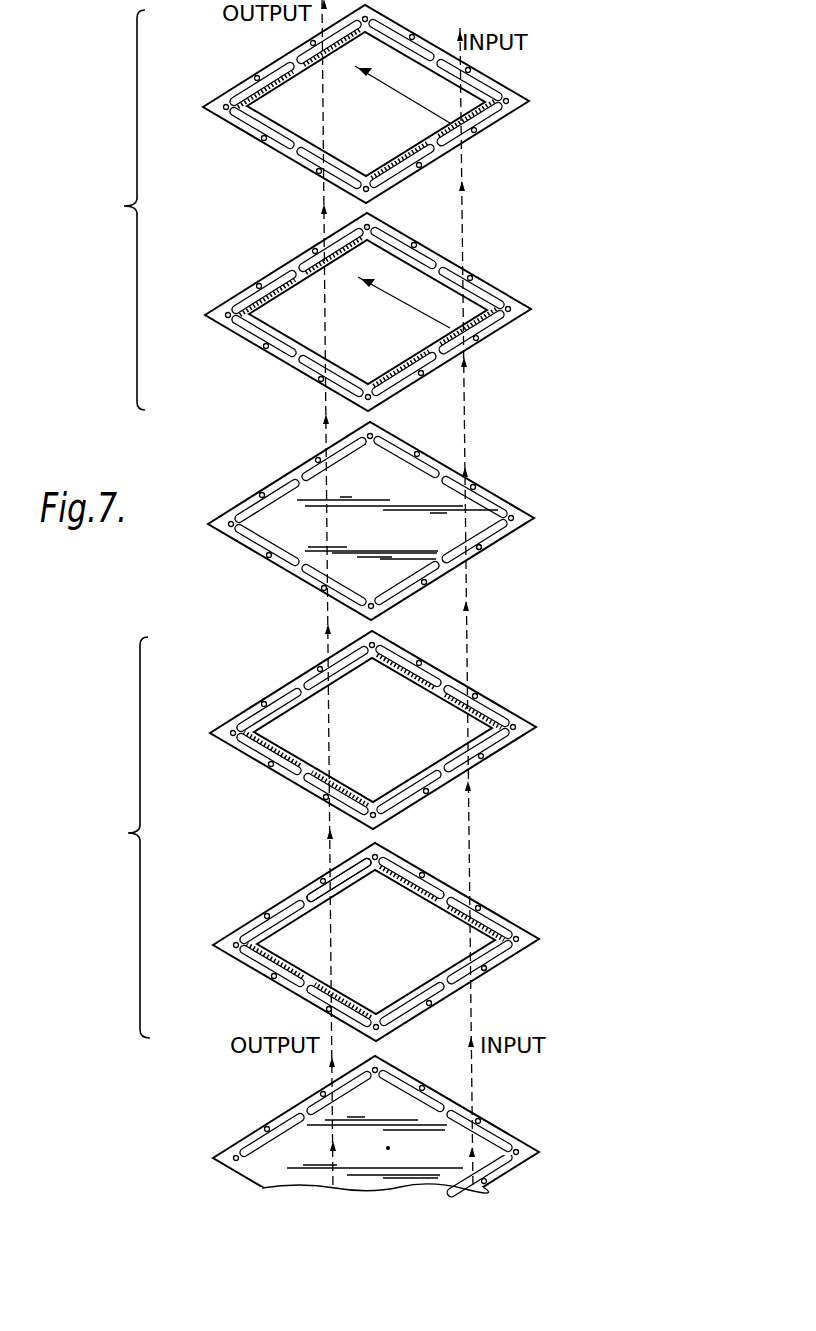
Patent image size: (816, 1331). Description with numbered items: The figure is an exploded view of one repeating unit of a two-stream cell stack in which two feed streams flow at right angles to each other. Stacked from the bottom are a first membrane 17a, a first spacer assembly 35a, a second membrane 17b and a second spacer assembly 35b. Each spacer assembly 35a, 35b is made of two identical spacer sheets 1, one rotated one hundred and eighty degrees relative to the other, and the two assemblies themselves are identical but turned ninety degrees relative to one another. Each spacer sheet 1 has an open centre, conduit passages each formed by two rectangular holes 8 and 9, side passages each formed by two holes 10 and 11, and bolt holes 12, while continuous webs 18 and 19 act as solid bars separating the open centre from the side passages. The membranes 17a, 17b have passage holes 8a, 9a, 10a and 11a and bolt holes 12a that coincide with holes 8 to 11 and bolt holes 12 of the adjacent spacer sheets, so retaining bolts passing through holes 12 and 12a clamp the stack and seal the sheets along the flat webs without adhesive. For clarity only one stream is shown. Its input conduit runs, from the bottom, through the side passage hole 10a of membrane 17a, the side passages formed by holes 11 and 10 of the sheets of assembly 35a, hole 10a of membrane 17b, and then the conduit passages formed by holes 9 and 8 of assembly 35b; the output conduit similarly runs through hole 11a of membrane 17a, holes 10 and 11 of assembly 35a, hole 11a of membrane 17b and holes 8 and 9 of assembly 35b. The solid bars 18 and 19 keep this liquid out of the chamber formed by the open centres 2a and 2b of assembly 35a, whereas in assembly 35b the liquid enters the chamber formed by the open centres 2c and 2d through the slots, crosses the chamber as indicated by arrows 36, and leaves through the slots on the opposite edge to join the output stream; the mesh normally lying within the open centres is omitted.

The spacer sheet 1 is at (371, 523).
The open centre 2a is at (300, 942).
The open centre 2b is at (295, 738).
The open centre 2c is at (287, 307).
The open centre 2d is at (285, 100).
The conduit passage hole 8 is at (366, 564).
The conduit passage hole 9 is at (358, 480).
The side passage hole 10 is at (378, 525).
The side passage hole 11 is at (388, 501).
The bolt hole 12 is at (480, 970).
The continuous web 18 is at (397, 826).
The continuous web 19 is at (407, 817).
The flow arrows 36 is at (402, 197).
The membrane passage hole 8a is at (485, 500).
The membrane passage hole 9a is at (242, 861).
The membrane side passage hole 10a is at (514, 858).
The membrane side passage hole 11a is at (257, 807).
The membrane bolt hole 12a is at (504, 851).
The first membrane 17a is at (240, 1177).
The second membrane 17b is at (233, 543).
The first spacer assembly 35a is at (119, 837).
The second spacer assembly 35b is at (112, 210).